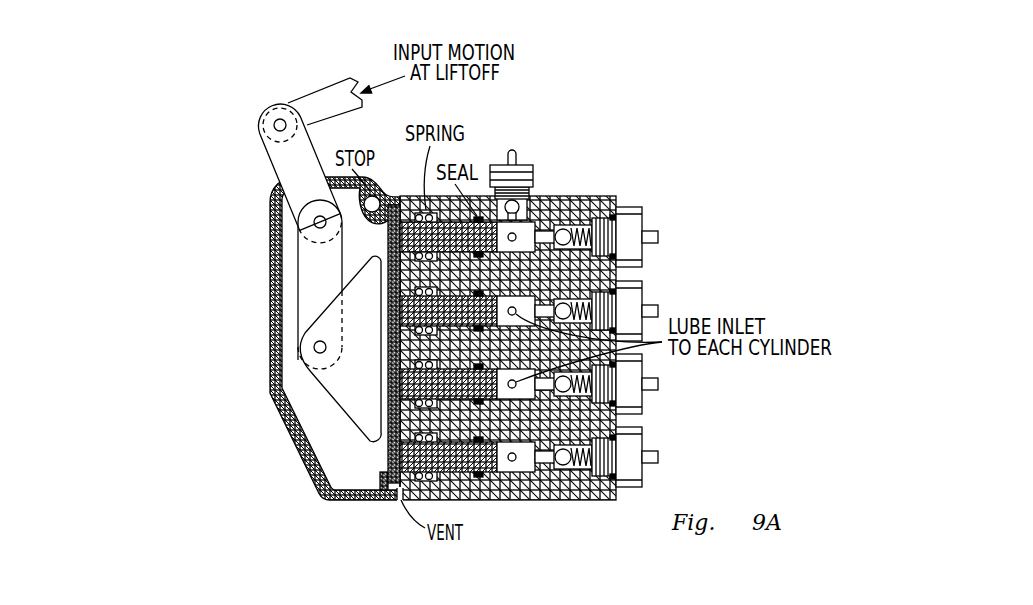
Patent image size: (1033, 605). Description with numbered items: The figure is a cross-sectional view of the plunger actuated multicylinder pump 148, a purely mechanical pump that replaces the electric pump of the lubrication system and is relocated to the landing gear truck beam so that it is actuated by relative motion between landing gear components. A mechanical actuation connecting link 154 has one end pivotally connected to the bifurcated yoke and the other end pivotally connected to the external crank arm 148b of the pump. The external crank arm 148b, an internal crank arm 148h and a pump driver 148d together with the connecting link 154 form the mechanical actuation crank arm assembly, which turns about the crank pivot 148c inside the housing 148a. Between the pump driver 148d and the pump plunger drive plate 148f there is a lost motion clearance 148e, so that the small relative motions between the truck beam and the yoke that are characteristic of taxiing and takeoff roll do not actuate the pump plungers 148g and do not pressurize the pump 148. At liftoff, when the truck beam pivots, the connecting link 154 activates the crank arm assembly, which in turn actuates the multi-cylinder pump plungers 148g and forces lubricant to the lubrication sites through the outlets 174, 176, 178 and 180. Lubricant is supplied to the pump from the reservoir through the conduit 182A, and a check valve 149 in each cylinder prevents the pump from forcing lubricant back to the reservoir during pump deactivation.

The plunger actuated multicylinder pump 148 is at (222, 92).
The housing 148a is at (270, 333).
The external crank arm 148b is at (268, 156).
The crank pivot 148c is at (298, 224).
The pump driver 148d is at (318, 384).
The lost motion clearance 148e is at (387, 452).
The pump plunger drive plate 148f is at (389, 455).
The pump plungers 148g is at (462, 468).
The internal crank arm 148h is at (300, 284).
The check valve 149 is at (560, 284).
The mechanical actuation connecting link 154 is at (320, 97).
The lube outlet fitting 174 is at (677, 236).
The lube outlet fitting 176 is at (677, 308).
The lube outlet fitting 178 is at (677, 380).
The lube outlet fitting 180 is at (677, 451).
The conduit 182A is at (519, 127).